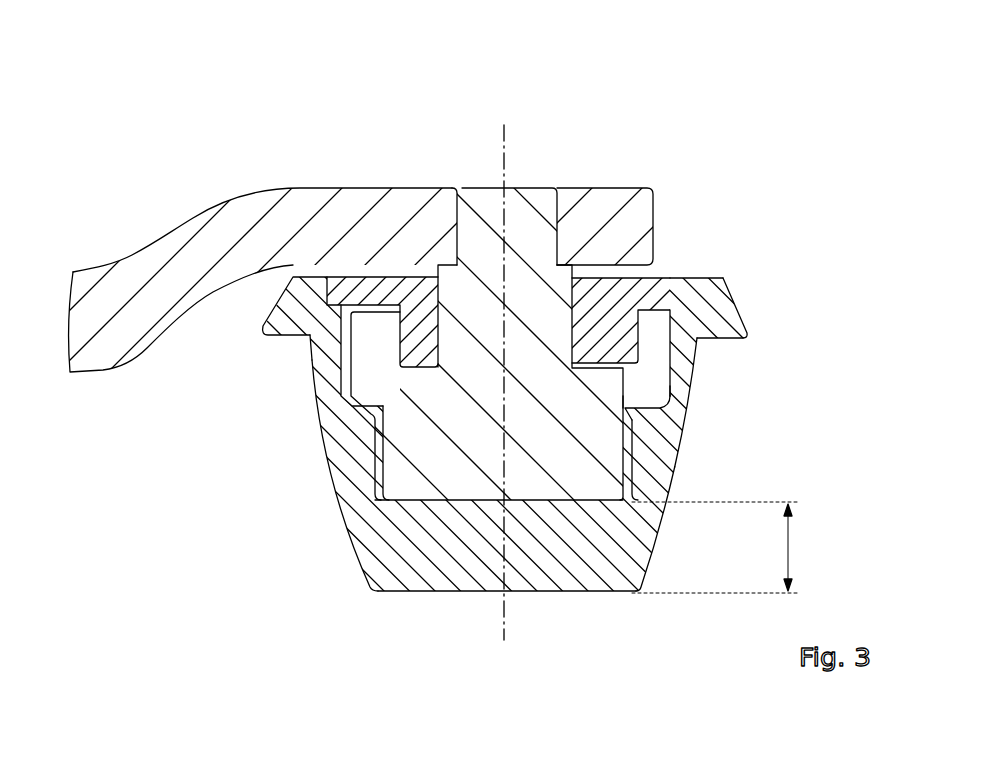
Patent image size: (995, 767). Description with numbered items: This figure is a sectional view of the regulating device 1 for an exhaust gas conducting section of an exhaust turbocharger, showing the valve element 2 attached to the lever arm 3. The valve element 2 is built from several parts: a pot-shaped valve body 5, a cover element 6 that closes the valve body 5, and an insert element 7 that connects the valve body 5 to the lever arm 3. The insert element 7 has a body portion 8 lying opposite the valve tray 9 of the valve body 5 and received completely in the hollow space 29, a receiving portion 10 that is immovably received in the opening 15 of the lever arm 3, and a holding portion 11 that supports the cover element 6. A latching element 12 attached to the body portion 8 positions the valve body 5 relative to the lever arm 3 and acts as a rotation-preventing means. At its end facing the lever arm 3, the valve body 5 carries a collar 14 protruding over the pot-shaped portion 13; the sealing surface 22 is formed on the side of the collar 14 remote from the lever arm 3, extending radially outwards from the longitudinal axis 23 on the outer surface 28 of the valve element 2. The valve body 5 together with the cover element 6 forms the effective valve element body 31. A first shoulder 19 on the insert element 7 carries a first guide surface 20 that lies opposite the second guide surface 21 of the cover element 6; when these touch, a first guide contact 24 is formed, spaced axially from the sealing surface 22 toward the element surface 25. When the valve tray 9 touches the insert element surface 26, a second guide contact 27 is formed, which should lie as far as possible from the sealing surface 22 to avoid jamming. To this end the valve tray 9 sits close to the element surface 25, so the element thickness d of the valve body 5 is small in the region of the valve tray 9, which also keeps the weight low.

The regulating device 1 is at (838, 214).
The valve element 2 is at (497, 383).
The lever arm 3 is at (465, 383).
The valve body 5 is at (688, 529).
The cover element 6 is at (673, 262).
The insert element 7 is at (675, 428).
The body portion 8 is at (621, 466).
The valve tray 9 is at (330, 490).
The receiving portion 10 is at (538, 186).
The holding portion 11 is at (401, 262).
The latching element 12 is at (313, 355).
The pot-shaped portion 13 is at (670, 453).
The collar 14 is at (721, 312).
The opening 15 is at (474, 186).
The first shoulder 19 is at (272, 323).
The first guide surface 20 is at (497, 383).
The second guide surface 21 is at (635, 381).
The sealing surface 22 is at (733, 343).
The longitudinal axis 23 is at (508, 128).
The first guide contact 24 is at (372, 368).
The element surface 25 is at (562, 594).
The insert element surface 26 is at (340, 490).
The second guide contact 27 is at (352, 499).
The outer surface 28 is at (350, 552).
The hollow space 29 is at (726, 403).
The effective valve element body 31 is at (731, 248).
The element thickness d is at (795, 545).